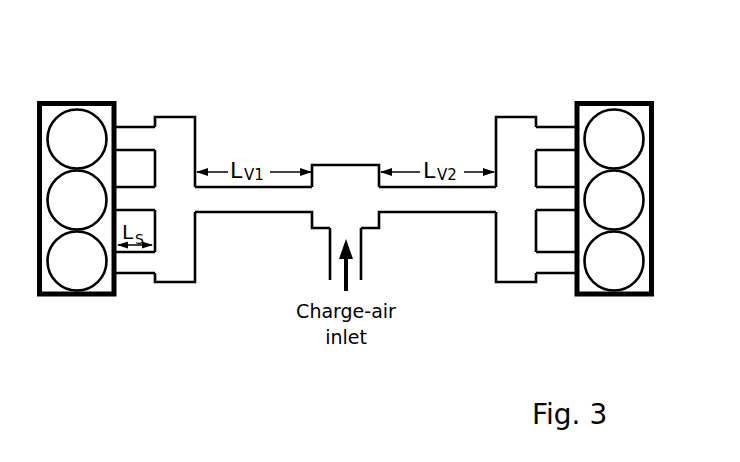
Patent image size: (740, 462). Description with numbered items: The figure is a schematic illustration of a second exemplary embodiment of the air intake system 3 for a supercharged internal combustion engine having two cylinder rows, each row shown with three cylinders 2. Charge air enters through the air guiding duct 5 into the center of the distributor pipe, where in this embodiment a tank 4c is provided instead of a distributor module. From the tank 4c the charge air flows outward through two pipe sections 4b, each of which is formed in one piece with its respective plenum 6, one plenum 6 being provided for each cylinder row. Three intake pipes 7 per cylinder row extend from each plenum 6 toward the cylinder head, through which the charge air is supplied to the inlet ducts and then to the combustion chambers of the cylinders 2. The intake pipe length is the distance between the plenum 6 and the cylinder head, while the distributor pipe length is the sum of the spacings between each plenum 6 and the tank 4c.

The cylinder 2 is at (68, 154).
The air intake system 3 is at (359, 92).
The pipe section 4b is at (275, 208).
The tank 4c is at (365, 215).
The air guiding duct 5 is at (330, 240).
The plenum 6 is at (171, 126).
The intake pipe 7 is at (132, 137).